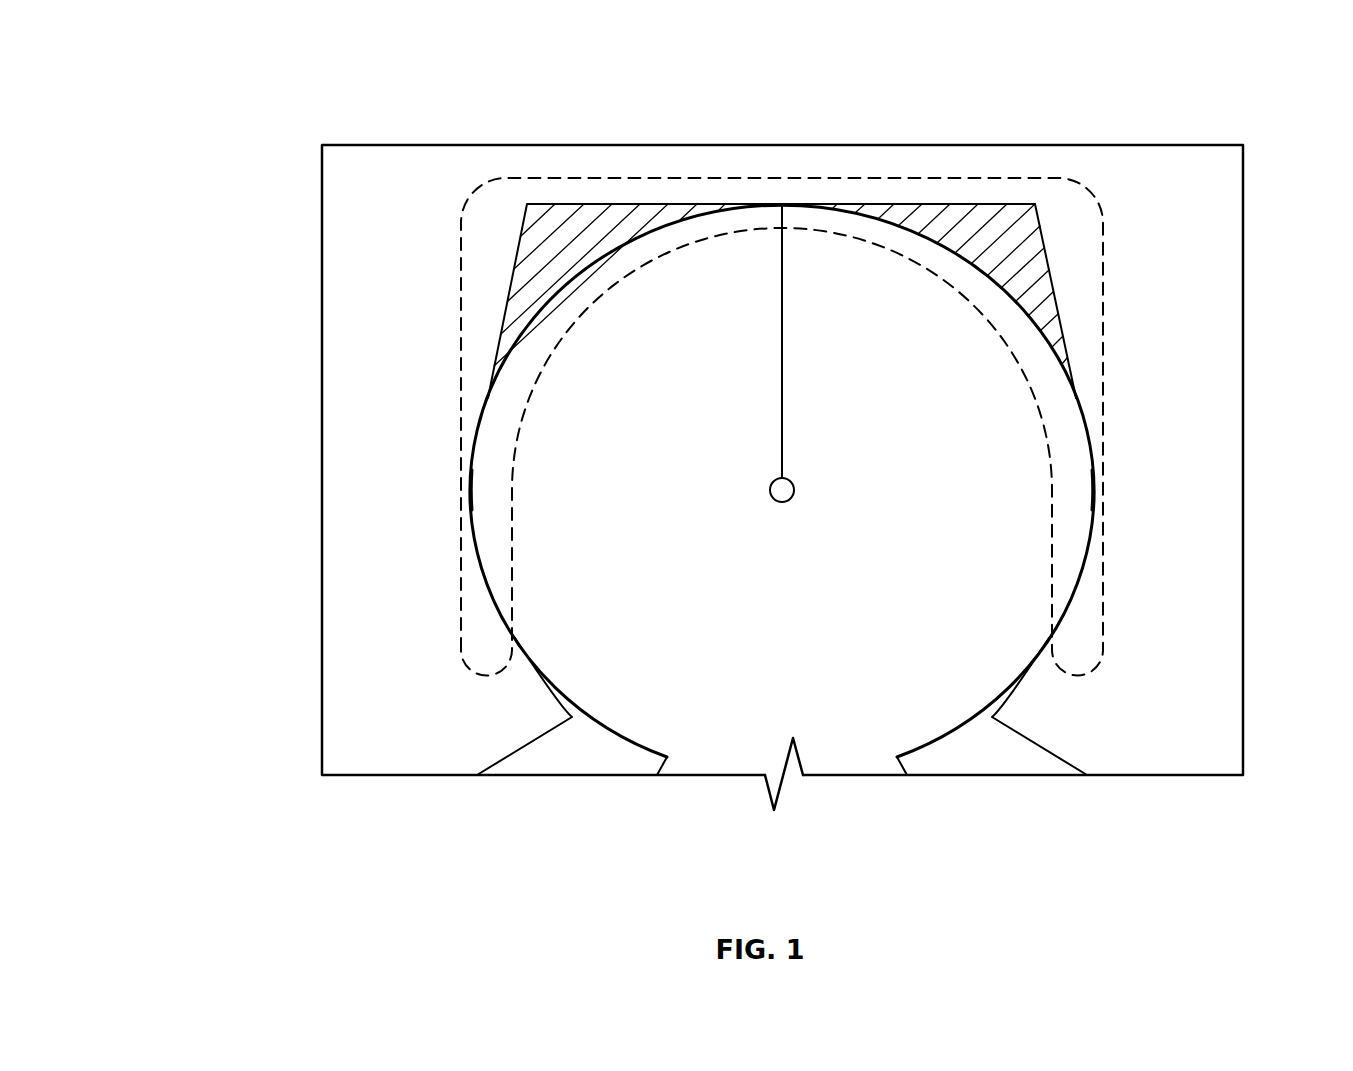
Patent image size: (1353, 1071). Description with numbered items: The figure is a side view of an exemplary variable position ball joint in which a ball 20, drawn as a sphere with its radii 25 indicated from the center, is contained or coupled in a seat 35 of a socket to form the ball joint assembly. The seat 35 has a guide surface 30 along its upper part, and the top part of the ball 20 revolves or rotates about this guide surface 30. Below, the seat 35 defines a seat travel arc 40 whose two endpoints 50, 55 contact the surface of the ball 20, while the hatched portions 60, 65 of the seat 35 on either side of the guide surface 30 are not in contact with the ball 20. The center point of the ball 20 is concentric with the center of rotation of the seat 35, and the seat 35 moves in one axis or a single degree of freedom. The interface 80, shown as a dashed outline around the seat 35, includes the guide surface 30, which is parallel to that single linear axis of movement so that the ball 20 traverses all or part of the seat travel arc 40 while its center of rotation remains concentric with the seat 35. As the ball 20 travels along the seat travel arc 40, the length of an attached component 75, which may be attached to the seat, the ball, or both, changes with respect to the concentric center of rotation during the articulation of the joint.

The ball 20 is at (802, 703).
The radii of the ball 25 is at (786, 292).
The guide surface 30 is at (560, 210).
The seat 35 is at (1210, 297).
The seat travel arc 40 is at (466, 478).
The endpoint of seat travel arc 50 is at (479, 501).
The endpoint of seat travel arc 55 is at (1090, 492).
The portion of the seat 60 is at (594, 220).
The portion of the seat 65 is at (1007, 220).
The attached component 75 is at (705, 113).
The interface 80 is at (1103, 487).